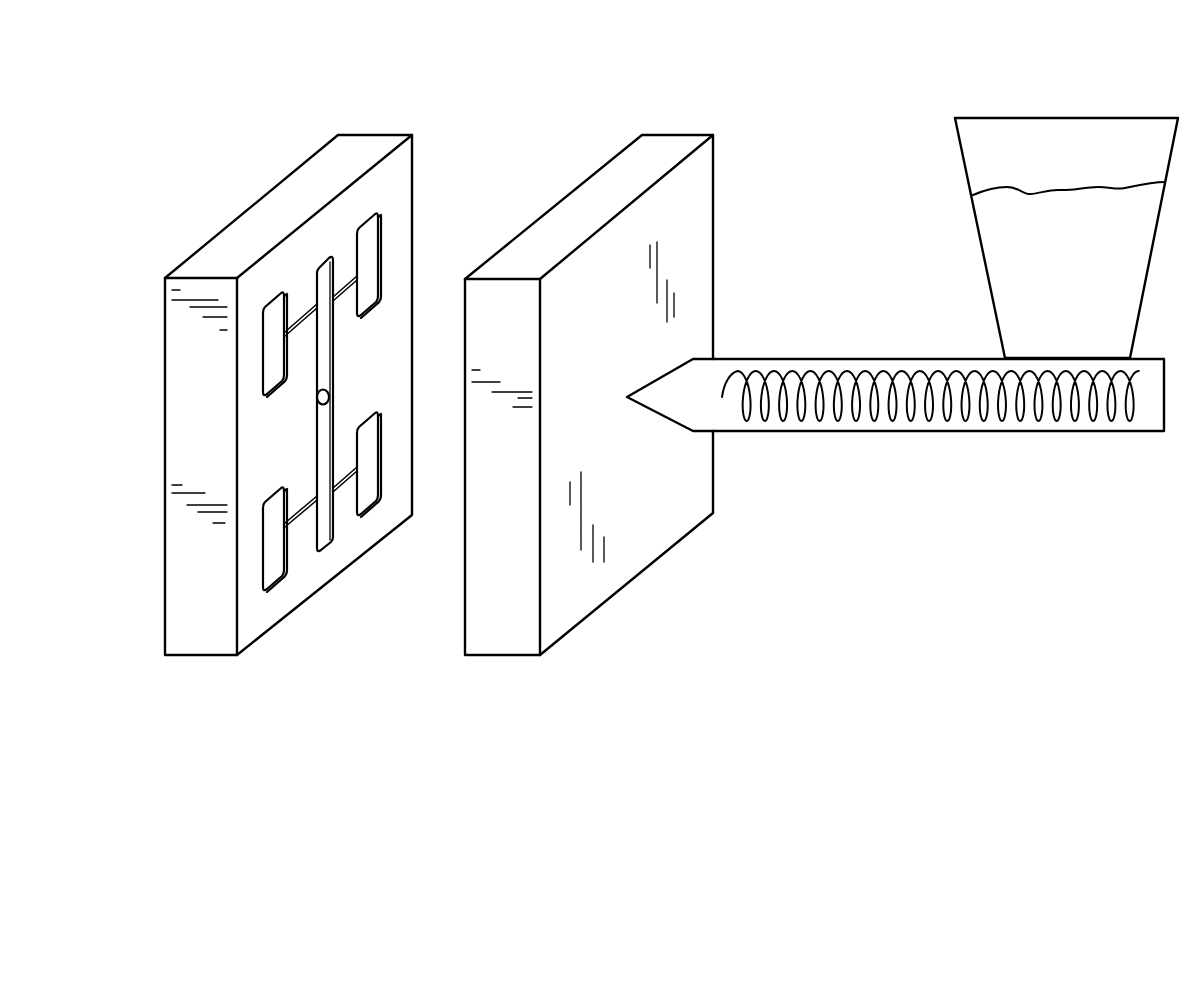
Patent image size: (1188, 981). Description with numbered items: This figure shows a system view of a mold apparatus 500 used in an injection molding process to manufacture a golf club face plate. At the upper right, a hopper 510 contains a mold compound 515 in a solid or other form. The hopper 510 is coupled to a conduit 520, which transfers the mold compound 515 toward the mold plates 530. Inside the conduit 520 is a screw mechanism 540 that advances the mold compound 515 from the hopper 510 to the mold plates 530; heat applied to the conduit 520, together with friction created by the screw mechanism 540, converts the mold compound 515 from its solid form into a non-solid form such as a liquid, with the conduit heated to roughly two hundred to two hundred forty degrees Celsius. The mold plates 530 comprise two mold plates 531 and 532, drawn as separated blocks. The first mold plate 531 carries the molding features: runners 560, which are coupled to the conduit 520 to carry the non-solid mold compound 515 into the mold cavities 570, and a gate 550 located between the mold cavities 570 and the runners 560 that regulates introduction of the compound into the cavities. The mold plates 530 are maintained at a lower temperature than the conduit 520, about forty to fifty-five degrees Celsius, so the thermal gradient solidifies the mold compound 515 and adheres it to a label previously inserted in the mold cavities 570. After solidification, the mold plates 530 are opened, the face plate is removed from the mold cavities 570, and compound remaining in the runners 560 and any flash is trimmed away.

The mold apparatus 500 is at (919, 601).
The hopper 510 is at (1013, 148).
The mold compound 515 is at (1000, 258).
The conduit 520 is at (1145, 422).
The screw mechanism 540 is at (1002, 415).
The mold plates 530 is at (285, 155).
The mold plate 531 is at (243, 248).
The mold plate 532 is at (514, 648).
The gate 550 is at (331, 392).
The runners 560 is at (325, 362).
The mold cavities 570 is at (368, 243).